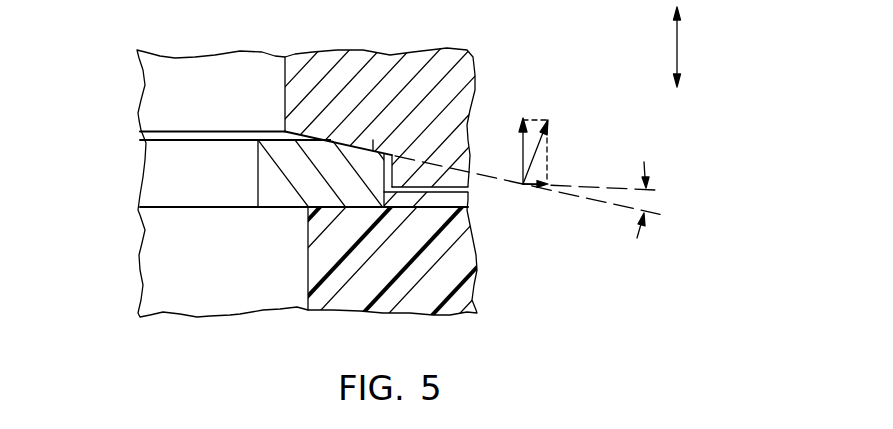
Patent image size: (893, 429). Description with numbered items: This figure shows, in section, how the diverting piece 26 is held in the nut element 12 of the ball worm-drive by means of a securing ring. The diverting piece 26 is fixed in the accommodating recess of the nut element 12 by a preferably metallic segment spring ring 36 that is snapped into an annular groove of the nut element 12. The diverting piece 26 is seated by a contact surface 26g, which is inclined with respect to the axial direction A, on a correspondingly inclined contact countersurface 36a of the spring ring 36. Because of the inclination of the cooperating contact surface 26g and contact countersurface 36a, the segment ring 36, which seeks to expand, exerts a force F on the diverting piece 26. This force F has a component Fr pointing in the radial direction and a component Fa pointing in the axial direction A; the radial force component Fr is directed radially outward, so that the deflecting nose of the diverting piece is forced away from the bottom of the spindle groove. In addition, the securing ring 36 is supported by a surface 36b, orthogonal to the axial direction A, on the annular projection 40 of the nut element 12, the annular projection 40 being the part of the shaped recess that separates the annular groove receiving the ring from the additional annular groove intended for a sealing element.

The nut element 12 is at (466, 267).
The diverting piece 26 is at (450, 62).
The contact surface 26g is at (371, 140).
The segment spring ring 36 is at (157, 160).
The contact countersurface 36a is at (371, 140).
The surface 36b is at (328, 195).
The annular projection 40 is at (345, 297).
The axial direction A is at (677, 43).
The force F is at (545, 144).
The axial force component Fa is at (520, 153).
The radial force component Fr is at (550, 178).